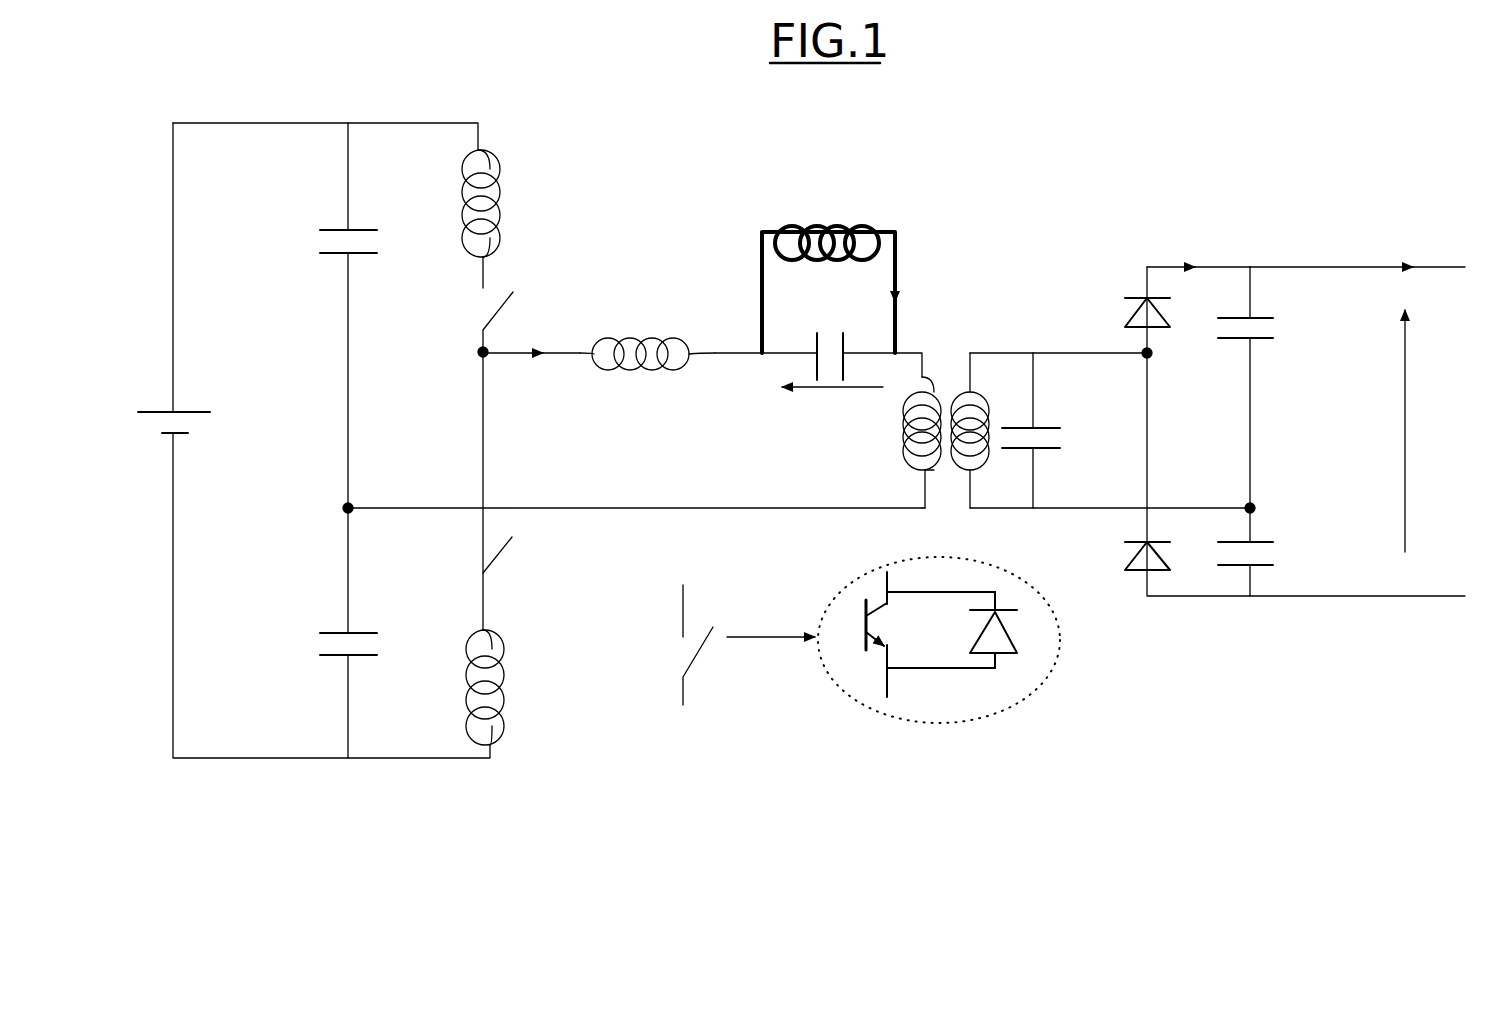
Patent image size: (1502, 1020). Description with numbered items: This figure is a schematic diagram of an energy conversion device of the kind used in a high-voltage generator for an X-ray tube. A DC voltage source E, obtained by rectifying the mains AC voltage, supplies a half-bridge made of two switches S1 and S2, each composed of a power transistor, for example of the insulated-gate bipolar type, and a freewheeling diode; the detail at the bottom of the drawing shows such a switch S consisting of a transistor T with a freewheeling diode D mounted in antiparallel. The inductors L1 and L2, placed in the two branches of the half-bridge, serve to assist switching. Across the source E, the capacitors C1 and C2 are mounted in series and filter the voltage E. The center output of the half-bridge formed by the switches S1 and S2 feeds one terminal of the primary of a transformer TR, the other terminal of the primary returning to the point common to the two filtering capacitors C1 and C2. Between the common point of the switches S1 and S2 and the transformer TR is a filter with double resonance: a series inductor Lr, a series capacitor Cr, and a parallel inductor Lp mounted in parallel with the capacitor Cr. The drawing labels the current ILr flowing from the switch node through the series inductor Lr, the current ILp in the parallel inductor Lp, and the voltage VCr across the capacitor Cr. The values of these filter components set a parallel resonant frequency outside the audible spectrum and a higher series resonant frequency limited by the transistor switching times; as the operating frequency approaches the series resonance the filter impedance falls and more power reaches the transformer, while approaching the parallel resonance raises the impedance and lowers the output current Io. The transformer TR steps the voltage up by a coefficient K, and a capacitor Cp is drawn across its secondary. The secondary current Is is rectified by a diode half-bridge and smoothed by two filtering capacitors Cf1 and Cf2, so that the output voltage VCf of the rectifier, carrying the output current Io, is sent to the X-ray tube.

The DC voltage source E is at (190, 415).
The filtering capacitor C1 is at (319, 235).
The filtering capacitor C2 is at (314, 640).
The inductor L1 is at (508, 203).
The inductor L2 is at (509, 687).
The switch S1 is at (466, 322).
The switch S2 is at (469, 555).
The resonant inductor current ILr is at (513, 377).
The series inductor Lr is at (647, 325).
The parallel inductor Lp is at (828, 255).
The parallel inductor current ILp is at (919, 280).
The series capacitor Cr is at (838, 329).
The resonant capacitor voltage VCr is at (832, 412).
The transformer TR is at (961, 416).
The step-up coefficient K is at (942, 527).
The parallel capacitor Cp is at (1061, 430).
The secondary current Is is at (1198, 238).
The output current Io is at (1357, 231).
The filtering capacitor Cf1 is at (1275, 333).
The filtering capacitor Cf2 is at (1276, 561).
The output voltage VCf is at (1448, 431).
The switch S is at (728, 645).
The transistor T is at (908, 634).
The freewheeling diode D is at (1003, 643).